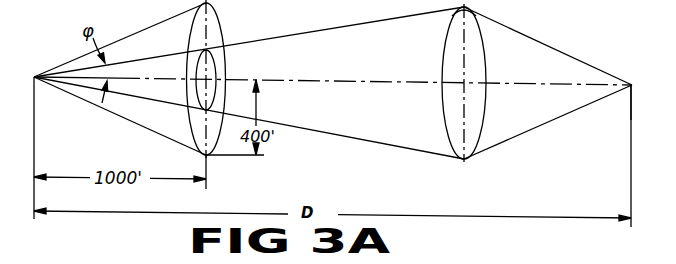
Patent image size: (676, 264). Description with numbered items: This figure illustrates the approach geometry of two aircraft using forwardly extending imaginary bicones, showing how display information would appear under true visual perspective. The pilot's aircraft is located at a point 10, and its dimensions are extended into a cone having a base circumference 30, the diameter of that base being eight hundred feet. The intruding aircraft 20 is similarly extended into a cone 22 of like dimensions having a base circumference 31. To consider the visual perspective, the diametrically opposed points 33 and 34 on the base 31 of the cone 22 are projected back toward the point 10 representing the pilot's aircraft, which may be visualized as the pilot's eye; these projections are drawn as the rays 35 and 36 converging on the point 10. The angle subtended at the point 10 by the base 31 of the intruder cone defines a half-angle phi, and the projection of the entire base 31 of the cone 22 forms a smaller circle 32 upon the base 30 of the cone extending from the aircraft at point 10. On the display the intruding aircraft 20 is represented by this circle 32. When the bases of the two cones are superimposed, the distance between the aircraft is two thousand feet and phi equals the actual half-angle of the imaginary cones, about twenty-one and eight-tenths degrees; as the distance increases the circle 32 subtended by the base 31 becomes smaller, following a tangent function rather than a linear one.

The point representing pilot's aircraft 10 is at (35, 76).
The base circumference of pilot's aircraft cone 30 is at (220, 27).
The projected circle 32 is at (215, 67).
The upper beam boundary ray 35 is at (290, 34).
The lower beam boundary ray 36 is at (313, 132).
The base circumference of intruder cone 31 is at (446, 42).
The diametrically opposed point on base 31 33 is at (467, 8).
The intruder aircraft cone 22 is at (530, 38).
The diametrically opposed point on base 31 34 is at (463, 160).
The intruding aircraft 20 is at (631, 82).